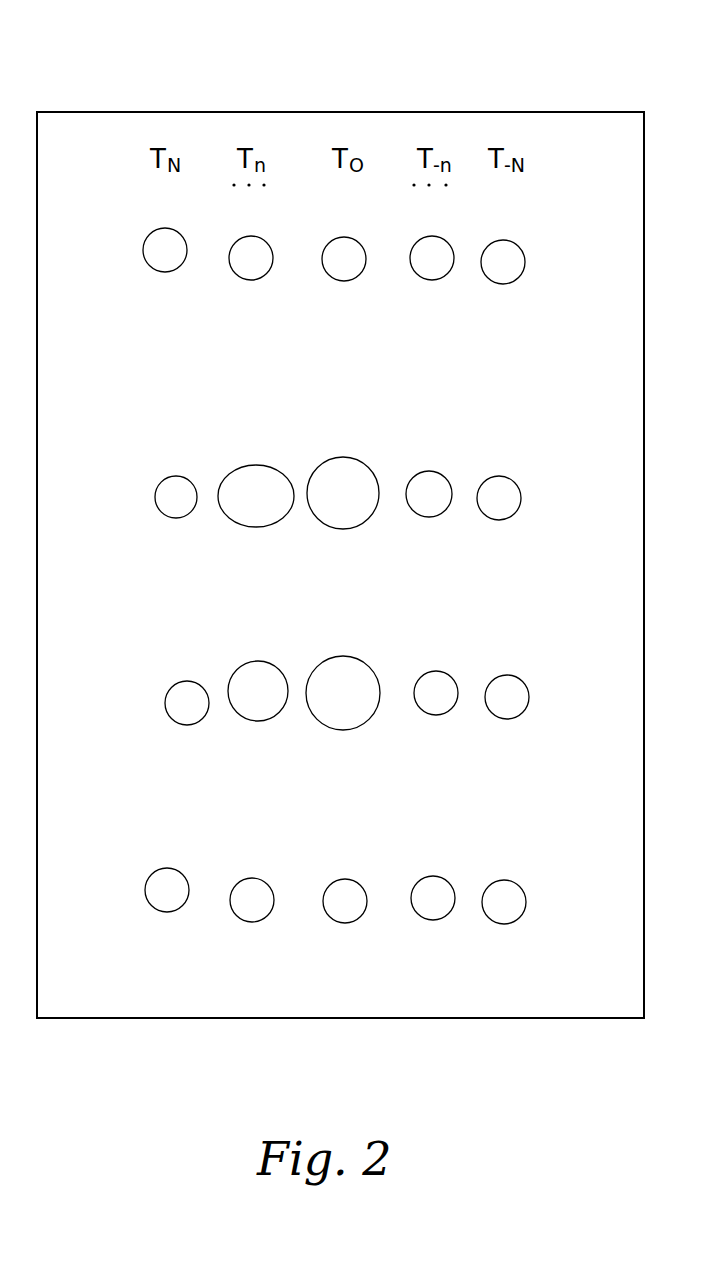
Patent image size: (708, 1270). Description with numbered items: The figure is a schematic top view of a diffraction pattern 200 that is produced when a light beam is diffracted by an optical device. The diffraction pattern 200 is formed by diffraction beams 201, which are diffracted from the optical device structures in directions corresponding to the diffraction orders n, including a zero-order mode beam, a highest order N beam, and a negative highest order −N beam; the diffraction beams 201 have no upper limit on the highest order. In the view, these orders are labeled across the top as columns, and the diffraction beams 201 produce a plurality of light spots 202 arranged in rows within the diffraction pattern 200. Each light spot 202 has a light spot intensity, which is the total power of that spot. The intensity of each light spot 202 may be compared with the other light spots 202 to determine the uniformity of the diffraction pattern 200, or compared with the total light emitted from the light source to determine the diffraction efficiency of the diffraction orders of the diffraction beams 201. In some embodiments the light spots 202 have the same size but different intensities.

The diffraction pattern 200 is at (509, 45).
The diffraction beams 201 is at (195, 311).
The light spots 202 is at (498, 477).